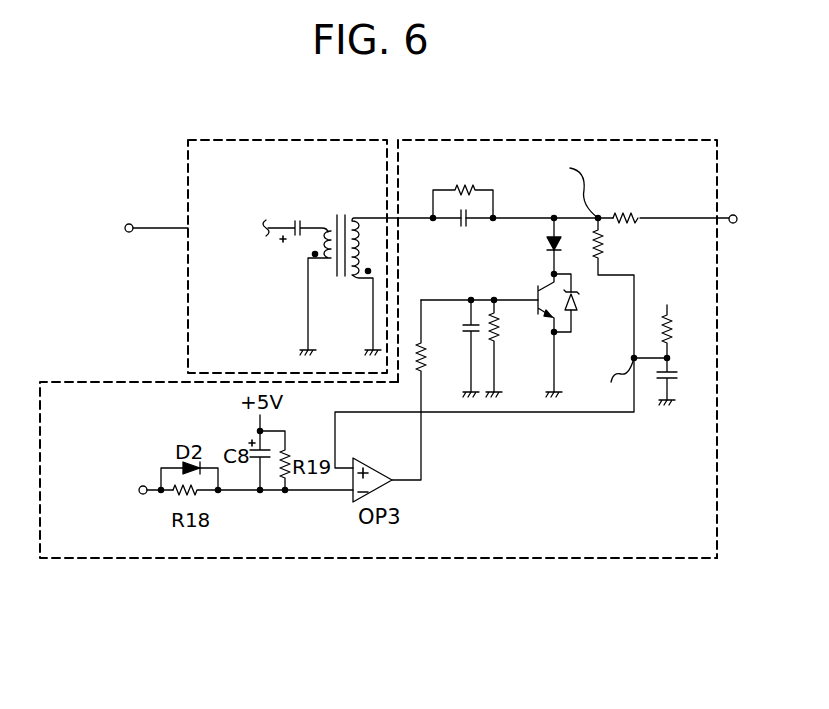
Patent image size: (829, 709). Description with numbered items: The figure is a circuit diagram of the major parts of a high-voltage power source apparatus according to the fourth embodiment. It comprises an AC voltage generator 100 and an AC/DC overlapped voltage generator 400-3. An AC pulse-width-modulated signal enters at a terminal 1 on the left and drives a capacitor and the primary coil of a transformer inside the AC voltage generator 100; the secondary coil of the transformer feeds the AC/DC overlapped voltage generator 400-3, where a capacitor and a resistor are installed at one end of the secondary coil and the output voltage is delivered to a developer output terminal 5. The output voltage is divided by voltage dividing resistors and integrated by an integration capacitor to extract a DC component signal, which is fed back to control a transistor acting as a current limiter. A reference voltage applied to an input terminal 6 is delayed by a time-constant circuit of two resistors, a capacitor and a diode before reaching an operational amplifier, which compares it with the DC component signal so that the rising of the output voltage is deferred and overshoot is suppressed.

The ACPWM input terminal 1 is at (129, 224).
The Dev output terminal 5 is at (734, 215).
The input terminal 6 is at (143, 486).
The AC voltage generator 100 is at (275, 139).
The AC/DC overlapped voltage generator 400-3 is at (580, 138).